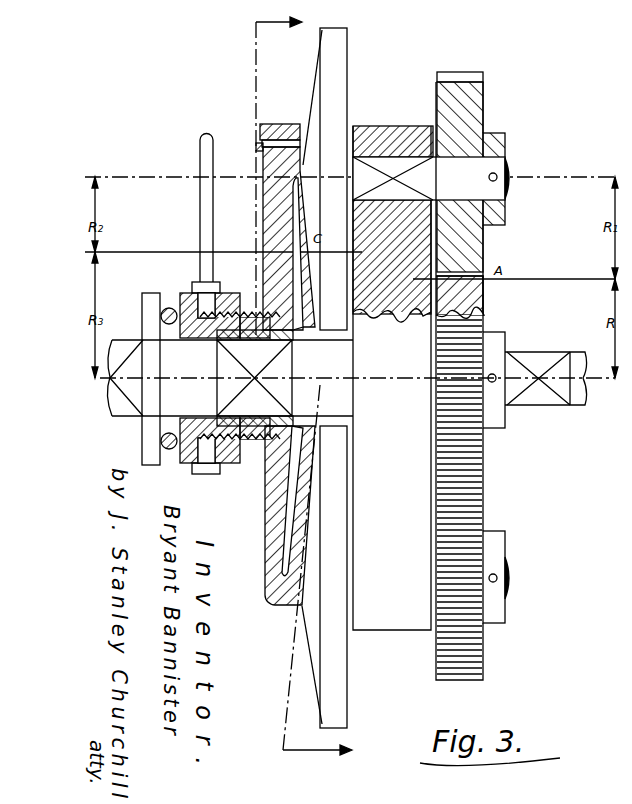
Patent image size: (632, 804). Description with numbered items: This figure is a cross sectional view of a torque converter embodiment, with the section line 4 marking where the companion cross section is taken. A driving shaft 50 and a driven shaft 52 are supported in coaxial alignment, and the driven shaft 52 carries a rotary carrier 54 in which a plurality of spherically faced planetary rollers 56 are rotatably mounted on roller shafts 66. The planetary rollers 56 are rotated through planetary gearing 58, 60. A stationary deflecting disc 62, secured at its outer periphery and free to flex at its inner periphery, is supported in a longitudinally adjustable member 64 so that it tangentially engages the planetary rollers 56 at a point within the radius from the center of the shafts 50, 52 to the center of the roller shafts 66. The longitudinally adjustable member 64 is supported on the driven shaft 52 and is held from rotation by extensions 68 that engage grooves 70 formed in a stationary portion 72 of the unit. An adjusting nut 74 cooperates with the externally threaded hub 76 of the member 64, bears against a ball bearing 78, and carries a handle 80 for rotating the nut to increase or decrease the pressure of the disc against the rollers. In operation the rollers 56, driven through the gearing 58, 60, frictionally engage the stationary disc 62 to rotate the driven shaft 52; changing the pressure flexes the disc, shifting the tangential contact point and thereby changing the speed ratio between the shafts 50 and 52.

The section line 4— 4 is at (287, 386).
The driving shaft 50 is at (543, 352).
The driven shaft 52 is at (141, 417).
The rotary carrier 54 is at (378, 125).
The spherically faced planetary rollers 56 is at (316, 72).
The planetary gearing 58 is at (478, 436).
The planetary gearing 60 is at (485, 104).
The stationary deflecting disc 62 is at (296, 213).
The longitudinally adjustable member 64 is at (268, 510).
The roller shafts 66 is at (500, 167).
The extensions 68 is at (257, 151).
The grooves 70 is at (262, 143).
The stationary portion 72 is at (284, 124).
The adjusting nut 74 is at (180, 293).
The externally threaded hub 76 is at (258, 446).
The ball bearing 78 is at (163, 466).
The handle 80 is at (199, 151).